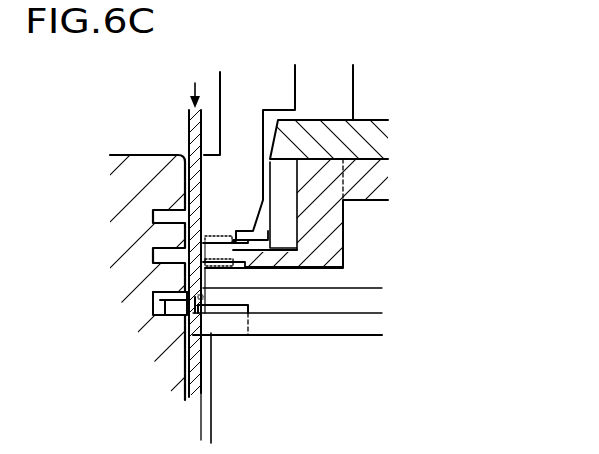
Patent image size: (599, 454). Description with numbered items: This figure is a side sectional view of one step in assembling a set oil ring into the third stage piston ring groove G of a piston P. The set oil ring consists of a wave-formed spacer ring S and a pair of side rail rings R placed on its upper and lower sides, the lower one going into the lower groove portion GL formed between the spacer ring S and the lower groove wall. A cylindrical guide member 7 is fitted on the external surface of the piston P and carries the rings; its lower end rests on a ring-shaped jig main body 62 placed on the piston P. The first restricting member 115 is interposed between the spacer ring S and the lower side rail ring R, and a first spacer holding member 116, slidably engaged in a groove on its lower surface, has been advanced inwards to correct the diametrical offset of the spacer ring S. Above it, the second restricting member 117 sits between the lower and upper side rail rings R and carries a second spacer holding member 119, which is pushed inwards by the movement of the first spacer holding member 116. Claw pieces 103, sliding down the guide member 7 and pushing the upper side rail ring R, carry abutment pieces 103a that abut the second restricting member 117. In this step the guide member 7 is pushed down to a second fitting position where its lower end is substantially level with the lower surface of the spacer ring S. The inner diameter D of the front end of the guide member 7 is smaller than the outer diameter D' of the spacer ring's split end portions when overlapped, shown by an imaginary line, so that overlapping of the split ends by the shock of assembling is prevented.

The guide member 7 is at (193, 128).
The claw pieces 103 is at (250, 85).
The abutment pieces 103a is at (330, 85).
The second spacer holding member 119 is at (228, 243).
The side rail ring R is at (207, 240).
The piston P is at (142, 203).
The spacer ring S is at (178, 283).
The piston ring groove G is at (155, 315).
The lower groove portion GL is at (170, 317).
The first restricting member 115 is at (227, 300).
The first spacer holding member 116 is at (207, 330).
The second restricting member 117 is at (252, 245).
The jig main body 62 is at (355, 408).
The inner diameter of the front end portion of the guide member D is at (148, 396).
The outer diameter of the split end portions of the spacer ring D' is at (155, 430).